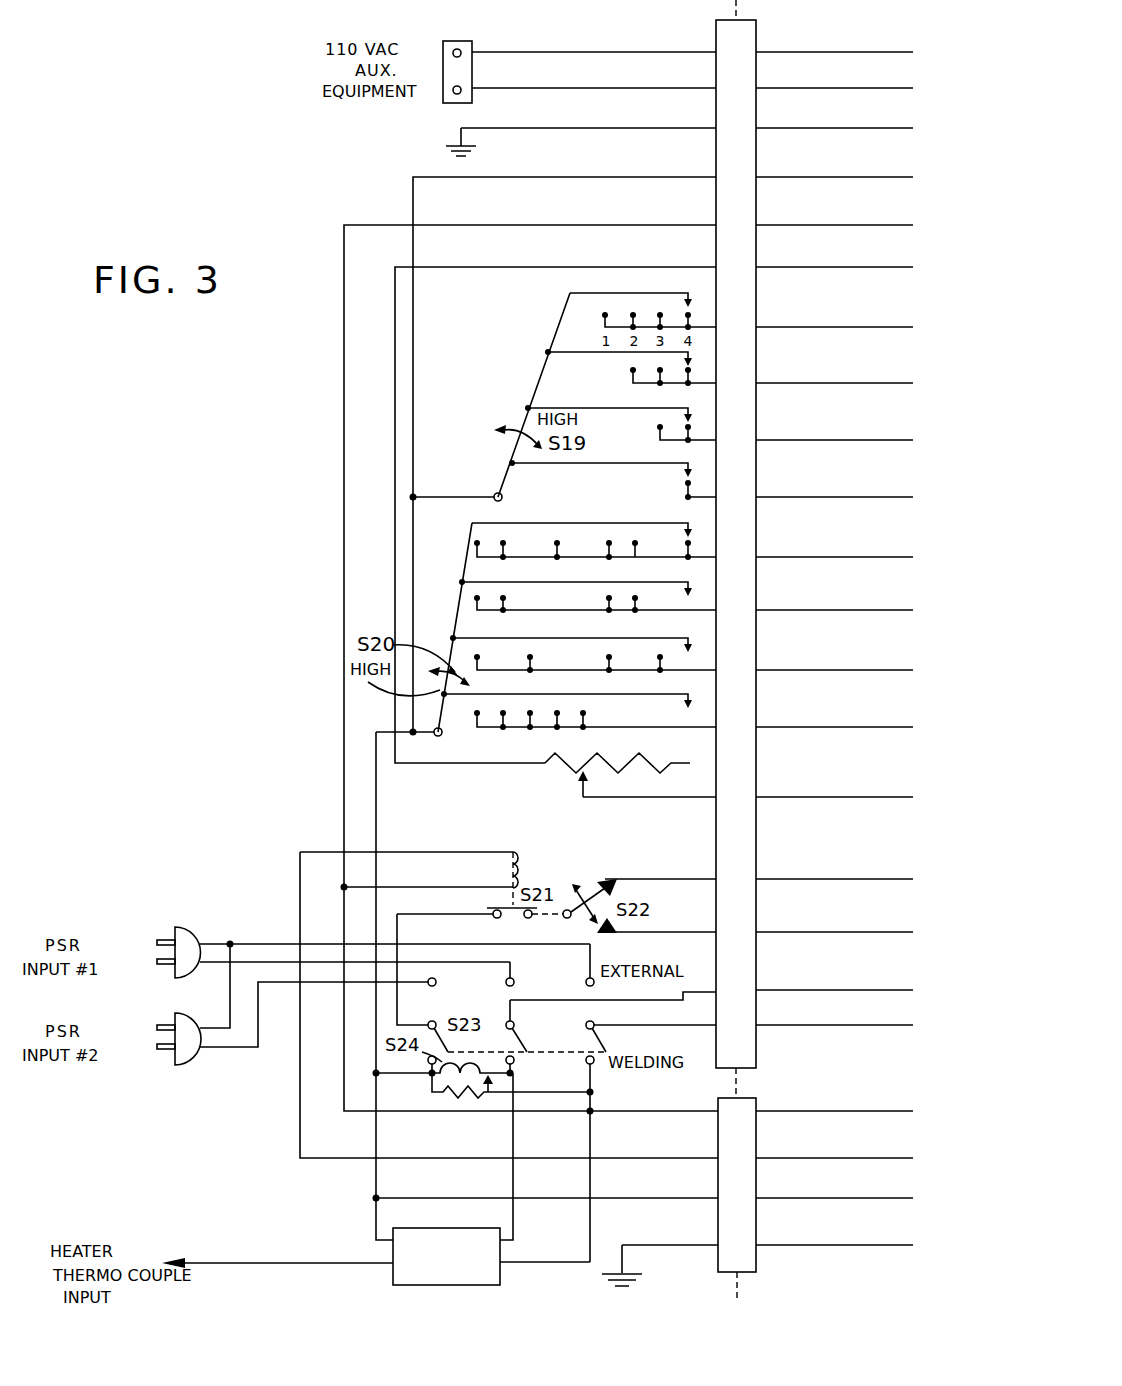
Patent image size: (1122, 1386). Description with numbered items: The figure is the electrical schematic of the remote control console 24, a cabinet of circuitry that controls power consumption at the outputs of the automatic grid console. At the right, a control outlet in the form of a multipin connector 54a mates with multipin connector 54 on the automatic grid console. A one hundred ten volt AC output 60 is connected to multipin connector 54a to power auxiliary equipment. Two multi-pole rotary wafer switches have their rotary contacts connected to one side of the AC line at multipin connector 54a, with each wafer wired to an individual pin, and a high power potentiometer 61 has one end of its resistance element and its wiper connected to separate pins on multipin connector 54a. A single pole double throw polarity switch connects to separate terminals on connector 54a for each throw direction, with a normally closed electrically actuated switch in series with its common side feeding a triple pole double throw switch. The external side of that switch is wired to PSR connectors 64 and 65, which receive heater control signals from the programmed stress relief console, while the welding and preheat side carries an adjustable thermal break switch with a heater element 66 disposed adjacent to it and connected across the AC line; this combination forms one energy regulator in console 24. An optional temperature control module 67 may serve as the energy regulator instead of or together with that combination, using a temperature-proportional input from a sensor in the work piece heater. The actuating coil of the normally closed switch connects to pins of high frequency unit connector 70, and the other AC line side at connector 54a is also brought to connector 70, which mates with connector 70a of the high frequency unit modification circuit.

The remote control console 24 is at (383, 207).
The multipin connector 54 is at (756, 26).
The multipin connector 54a is at (716, 30).
The 110 VAC output 60 is at (458, 41).
The high power potentiometer 61 is at (592, 762).
The PSR 1 connector 64 is at (191, 932).
The PSR 2 connector 65 is at (186, 1018).
The heater element 66 is at (446, 1104).
The temperature control module 67 is at (500, 1280).
The high frequency unit connector 70 is at (718, 1106).
The connector 70a is at (752, 1110).